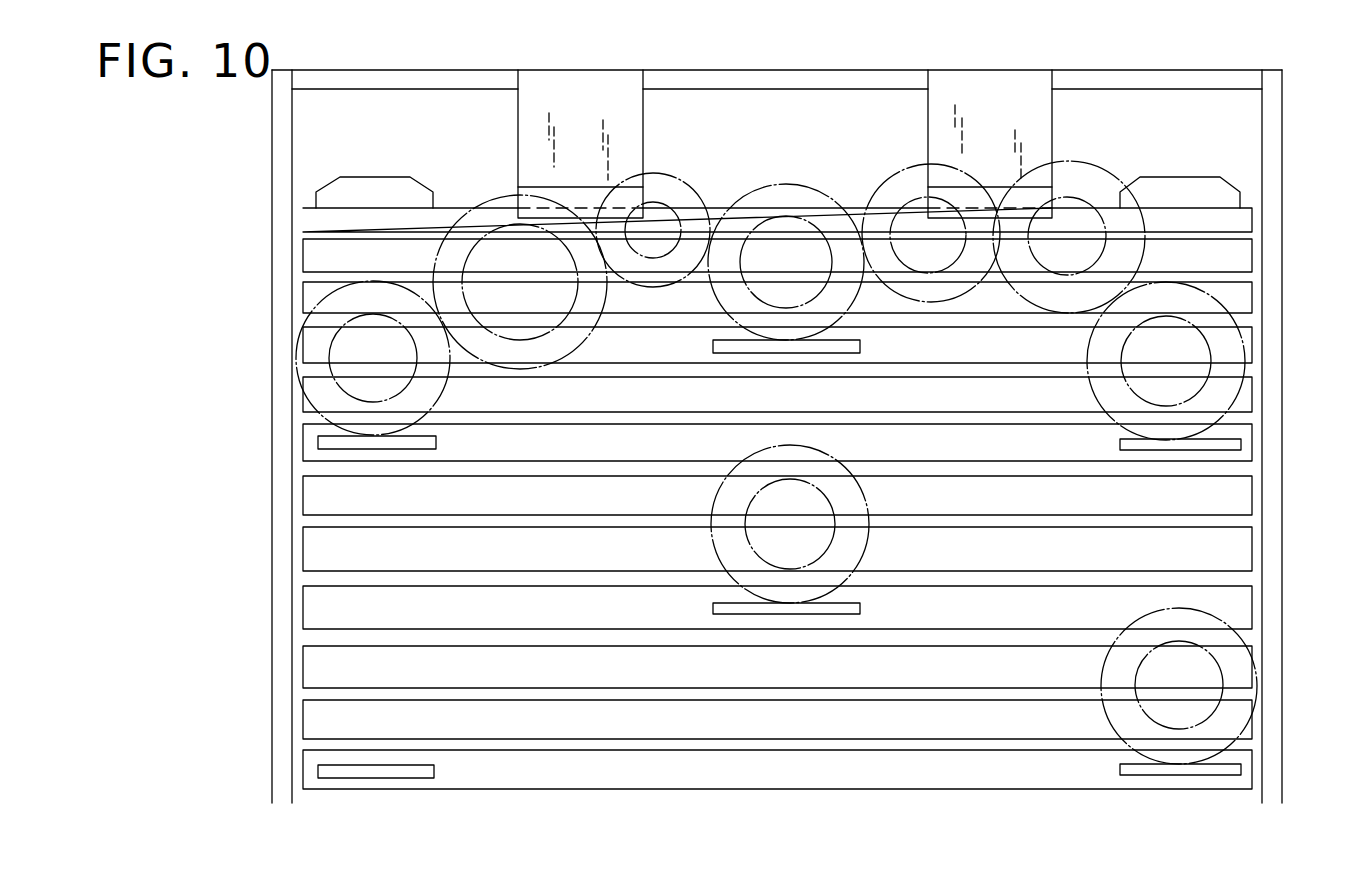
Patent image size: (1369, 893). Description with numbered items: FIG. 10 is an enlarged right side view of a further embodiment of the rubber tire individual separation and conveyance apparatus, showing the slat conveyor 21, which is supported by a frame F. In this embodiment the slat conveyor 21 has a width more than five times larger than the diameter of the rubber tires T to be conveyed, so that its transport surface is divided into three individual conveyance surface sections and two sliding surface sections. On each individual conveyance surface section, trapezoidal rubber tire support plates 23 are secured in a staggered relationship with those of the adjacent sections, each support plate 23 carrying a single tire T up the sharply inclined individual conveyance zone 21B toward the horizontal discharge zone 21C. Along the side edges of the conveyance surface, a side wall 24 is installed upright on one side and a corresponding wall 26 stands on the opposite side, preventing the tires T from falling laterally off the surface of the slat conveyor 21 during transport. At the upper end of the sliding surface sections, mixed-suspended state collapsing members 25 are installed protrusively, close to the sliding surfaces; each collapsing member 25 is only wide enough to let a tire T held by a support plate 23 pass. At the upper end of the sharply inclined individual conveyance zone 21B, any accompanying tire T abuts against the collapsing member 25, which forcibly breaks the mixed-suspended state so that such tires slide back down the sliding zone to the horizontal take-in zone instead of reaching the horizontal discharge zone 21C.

The slat conveyor 21 is at (790, 420).
The sharply inclined individual conveyance zone 21B is at (306, 669).
The horizontal discharge zone 21C is at (449, 205).
The rubber tire support plate 23 is at (378, 185).
The side wall 24 is at (274, 545).
The mixed-suspended state collapsing member 25 is at (643, 128).
The right side frame 26 is at (1282, 578).
The tire T is at (298, 291).
The frame F is at (440, 71).